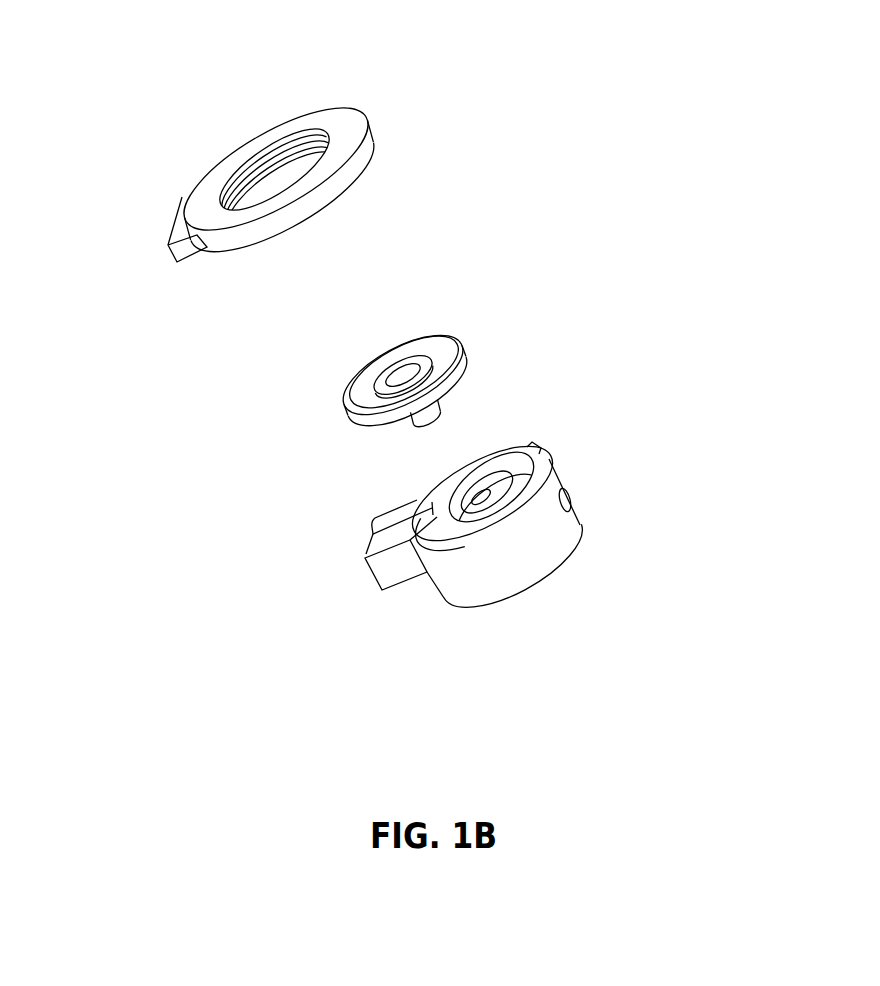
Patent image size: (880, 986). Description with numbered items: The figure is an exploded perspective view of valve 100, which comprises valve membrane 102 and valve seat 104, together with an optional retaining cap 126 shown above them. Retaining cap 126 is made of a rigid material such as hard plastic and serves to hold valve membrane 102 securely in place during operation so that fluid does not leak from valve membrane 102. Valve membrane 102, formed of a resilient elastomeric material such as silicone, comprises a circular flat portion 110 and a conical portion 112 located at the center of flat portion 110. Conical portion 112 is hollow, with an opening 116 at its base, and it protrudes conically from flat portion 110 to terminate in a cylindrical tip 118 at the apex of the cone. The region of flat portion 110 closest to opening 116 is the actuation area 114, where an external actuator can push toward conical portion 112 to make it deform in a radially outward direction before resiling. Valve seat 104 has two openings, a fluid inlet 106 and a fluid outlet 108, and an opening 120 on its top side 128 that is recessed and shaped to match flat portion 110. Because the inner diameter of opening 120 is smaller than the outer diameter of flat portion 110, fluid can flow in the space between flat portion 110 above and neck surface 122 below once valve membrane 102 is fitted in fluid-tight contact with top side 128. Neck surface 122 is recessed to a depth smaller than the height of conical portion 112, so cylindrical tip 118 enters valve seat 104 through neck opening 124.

The valve 100 is at (528, 44).
The valve membrane 102 is at (379, 375).
The valve seat 104 is at (474, 490).
The fluid inlet 106 is at (373, 541).
The fluid outlet 108 is at (571, 503).
The flat portion 110 is at (343, 398).
The conical portion 112 is at (417, 422).
The actuation area 114 is at (418, 360).
The opening 116 is at (403, 383).
The cylindrical tip 118 is at (438, 407).
The opening 120 is at (490, 473).
The neck surface 122 is at (445, 516).
The neck opening 124 is at (478, 503).
The retaining cap 126 is at (215, 193).
The top side 128 is at (538, 448).